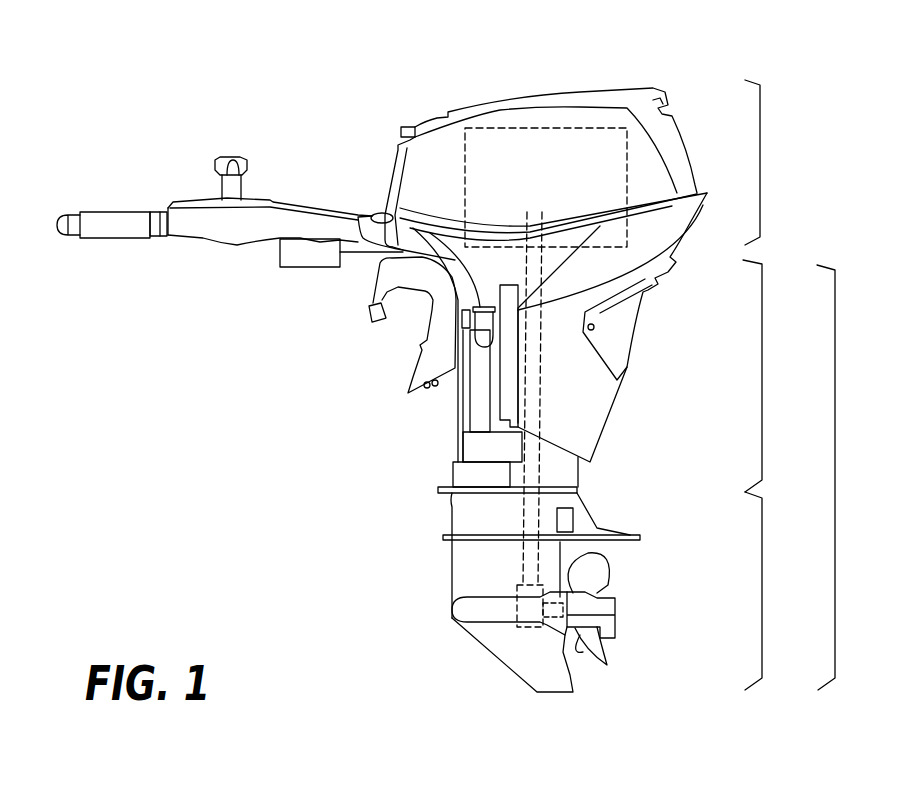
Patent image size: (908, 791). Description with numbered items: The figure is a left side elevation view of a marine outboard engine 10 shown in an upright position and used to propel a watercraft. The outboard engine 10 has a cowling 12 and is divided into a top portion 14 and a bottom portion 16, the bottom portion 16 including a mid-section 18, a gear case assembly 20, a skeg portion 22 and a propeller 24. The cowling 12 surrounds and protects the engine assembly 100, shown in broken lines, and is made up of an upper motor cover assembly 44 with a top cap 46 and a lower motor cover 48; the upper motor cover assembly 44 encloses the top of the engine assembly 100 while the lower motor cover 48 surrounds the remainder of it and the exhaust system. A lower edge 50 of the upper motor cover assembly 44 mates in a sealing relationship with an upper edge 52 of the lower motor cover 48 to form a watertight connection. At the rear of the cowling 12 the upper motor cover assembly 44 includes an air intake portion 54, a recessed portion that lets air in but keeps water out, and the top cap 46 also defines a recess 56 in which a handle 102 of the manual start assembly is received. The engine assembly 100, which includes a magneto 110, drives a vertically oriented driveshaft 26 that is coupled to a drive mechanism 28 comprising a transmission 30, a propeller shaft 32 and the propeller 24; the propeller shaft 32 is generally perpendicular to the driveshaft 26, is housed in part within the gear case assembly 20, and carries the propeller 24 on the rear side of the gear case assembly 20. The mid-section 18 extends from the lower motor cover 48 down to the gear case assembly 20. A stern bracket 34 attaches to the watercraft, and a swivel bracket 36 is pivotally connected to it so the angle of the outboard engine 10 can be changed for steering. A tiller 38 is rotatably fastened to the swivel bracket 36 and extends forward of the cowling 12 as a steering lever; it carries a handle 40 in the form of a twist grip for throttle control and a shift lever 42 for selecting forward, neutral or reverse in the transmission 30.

The marine outboard engine 10 is at (355, 101).
The cowling 12 is at (577, 72).
The top portion 14 is at (760, 155).
The bottom portion 16 is at (835, 468).
The mid-section 18 is at (762, 375).
The gear case assembly 20 is at (762, 583).
The skeg portion 22 is at (521, 672).
The propeller 24 is at (600, 567).
The driveshaft 26 is at (530, 508).
The drive mechanism 28 is at (504, 608).
The transmission 30 is at (527, 630).
The propeller shaft 32 is at (557, 615).
The stern bracket 34 is at (432, 342).
The swivel bracket 36 is at (408, 385).
The tiller 38 is at (196, 264).
The handle 40 is at (103, 220).
The shift lever 42 is at (233, 155).
The upper motor cover assembly 44 is at (423, 173).
The top cap 46 is at (482, 105).
The lower motor cover 48 is at (553, 257).
The lower edge 50 is at (427, 227).
The upper edge 52 is at (423, 248).
The air intake portion 54 is at (670, 112).
The recess 56 is at (419, 96).
The engine assembly 100 is at (513, 150).
The handle 102 is at (405, 127).
The magneto 110 is at (292, 262).